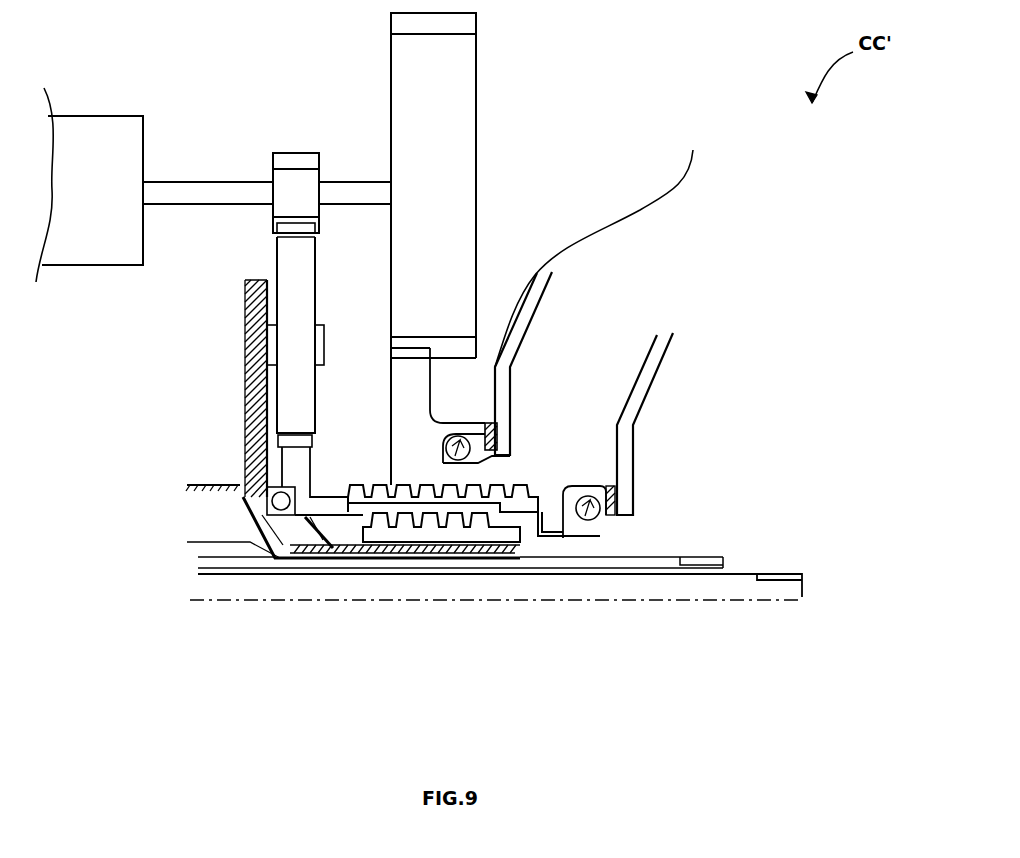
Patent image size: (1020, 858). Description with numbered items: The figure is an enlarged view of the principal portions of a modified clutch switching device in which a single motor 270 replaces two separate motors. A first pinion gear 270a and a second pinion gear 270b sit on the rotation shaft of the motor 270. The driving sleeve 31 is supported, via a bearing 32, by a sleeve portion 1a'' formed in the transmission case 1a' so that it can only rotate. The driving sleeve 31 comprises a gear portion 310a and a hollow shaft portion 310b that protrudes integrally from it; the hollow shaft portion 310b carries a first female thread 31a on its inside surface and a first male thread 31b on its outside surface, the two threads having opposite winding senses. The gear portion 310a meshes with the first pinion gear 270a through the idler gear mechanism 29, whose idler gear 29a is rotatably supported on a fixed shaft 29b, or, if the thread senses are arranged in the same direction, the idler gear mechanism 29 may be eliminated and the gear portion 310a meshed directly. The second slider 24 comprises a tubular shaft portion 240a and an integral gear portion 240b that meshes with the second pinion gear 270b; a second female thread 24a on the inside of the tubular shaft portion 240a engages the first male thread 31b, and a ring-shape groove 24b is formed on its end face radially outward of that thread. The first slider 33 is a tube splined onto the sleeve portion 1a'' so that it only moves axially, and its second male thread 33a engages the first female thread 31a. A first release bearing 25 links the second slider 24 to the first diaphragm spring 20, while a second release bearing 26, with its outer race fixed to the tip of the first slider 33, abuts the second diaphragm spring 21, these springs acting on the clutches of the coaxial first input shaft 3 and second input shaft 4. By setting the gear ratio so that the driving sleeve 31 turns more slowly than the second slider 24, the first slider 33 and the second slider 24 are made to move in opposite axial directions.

The motor 270 is at (92, 116).
The first pinion gear 270a is at (296, 189).
The second pinion gear 270b is at (427, 72).
The idler gear mechanism 29 is at (231, 362).
The idler gear 29a is at (277, 266).
The fixed shaft 29b is at (272, 349).
The transmission case 1a' is at (189, 388).
The bearing 32 is at (253, 478).
The second slider 24 is at (566, 234).
The tubular shaft portion 240a is at (585, 118).
The gear portion 240b is at (408, 395).
The first diaphragm spring 20 is at (534, 297).
The ring-shape groove 24b is at (515, 448).
The second female thread 24a is at (448, 489).
The first slider 33 is at (429, 531).
The sleeve portion 1a'' is at (405, 611).
The driving sleeve 31 is at (436, 565).
The gear portion 310a is at (290, 518).
The hollow shaft portion 310b is at (362, 505).
The first female thread 31a is at (393, 517).
The first male thread 31b is at (534, 489).
The first release bearing 25 is at (503, 524).
The second male thread 33a is at (520, 543).
The second release bearing 26 is at (600, 489).
The second diaphragm spring 21 is at (655, 362).
The second input shaft 4 is at (660, 557).
The first input shaft 3 is at (760, 574).